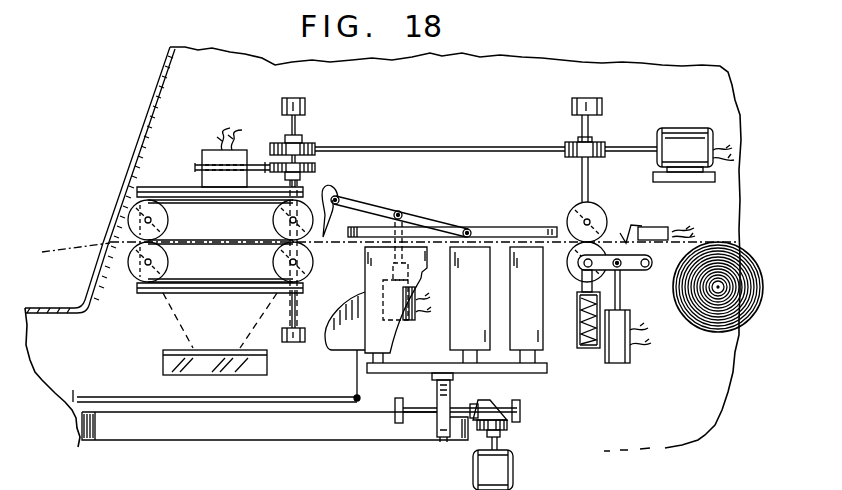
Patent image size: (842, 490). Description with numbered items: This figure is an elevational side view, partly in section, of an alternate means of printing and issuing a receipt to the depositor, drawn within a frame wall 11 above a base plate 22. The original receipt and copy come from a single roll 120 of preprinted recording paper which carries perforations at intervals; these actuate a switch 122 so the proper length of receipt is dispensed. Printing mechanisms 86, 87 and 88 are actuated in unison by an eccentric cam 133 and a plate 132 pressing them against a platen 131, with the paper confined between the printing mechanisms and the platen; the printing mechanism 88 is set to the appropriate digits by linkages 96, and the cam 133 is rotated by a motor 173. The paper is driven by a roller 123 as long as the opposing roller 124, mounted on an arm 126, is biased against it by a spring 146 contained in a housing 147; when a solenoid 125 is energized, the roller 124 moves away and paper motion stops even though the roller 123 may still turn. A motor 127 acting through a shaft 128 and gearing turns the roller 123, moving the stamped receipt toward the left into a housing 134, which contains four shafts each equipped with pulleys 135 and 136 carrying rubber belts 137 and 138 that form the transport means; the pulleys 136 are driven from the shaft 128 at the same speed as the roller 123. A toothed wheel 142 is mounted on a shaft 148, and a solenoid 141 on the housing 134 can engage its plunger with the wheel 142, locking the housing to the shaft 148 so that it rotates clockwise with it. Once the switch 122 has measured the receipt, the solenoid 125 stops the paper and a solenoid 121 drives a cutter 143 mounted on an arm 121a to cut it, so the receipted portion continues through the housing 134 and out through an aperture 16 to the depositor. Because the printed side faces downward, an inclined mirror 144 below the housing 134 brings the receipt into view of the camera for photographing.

The machine frame wall 11 is at (153, 90).
The aperture 16 is at (100, 243).
The base plate 22 is at (160, 428).
The printing mechanism 86 is at (537, 329).
The printing mechanism 87 is at (477, 329).
The printing mechanism 88 is at (384, 333).
The linkages 96 is at (143, 397).
The roll 120 is at (712, 328).
The solenoid 121 is at (412, 318).
The arm 121a is at (376, 207).
The switch 122 is at (630, 228).
The roller 123 is at (578, 208).
The opposing roller 124 is at (568, 267).
The solenoid 125 is at (617, 355).
The arm 126 is at (628, 272).
The motor 127 is at (683, 137).
The shaft 128 is at (466, 147).
The platen 131 is at (490, 227).
The plate 132 is at (497, 373).
The eccentric cam 133 is at (447, 437).
The housing 134 is at (172, 187).
The pulleys 135 is at (169, 220).
The pulleys 136 is at (273, 262).
The rubber belt 137 is at (256, 203).
The rubber belt 138 is at (220, 278).
The solenoid 141 is at (213, 150).
The toothed wheel 142 is at (317, 167).
The cutter 143 is at (334, 184).
The inclined mirror 144 is at (170, 352).
The spring 146 is at (587, 343).
The housing 147 is at (578, 350).
The shaft 148 is at (296, 123).
The motor 173 is at (512, 468).